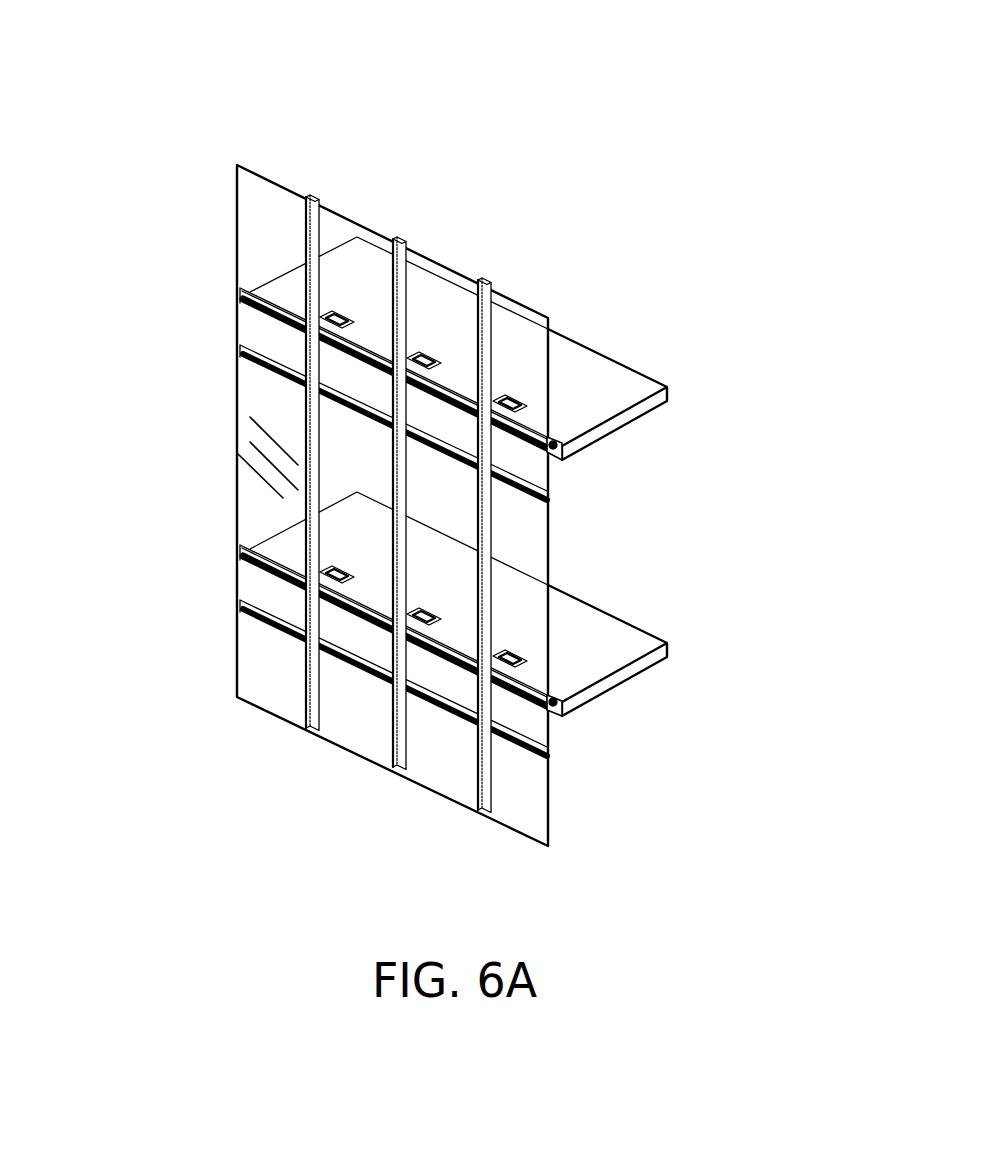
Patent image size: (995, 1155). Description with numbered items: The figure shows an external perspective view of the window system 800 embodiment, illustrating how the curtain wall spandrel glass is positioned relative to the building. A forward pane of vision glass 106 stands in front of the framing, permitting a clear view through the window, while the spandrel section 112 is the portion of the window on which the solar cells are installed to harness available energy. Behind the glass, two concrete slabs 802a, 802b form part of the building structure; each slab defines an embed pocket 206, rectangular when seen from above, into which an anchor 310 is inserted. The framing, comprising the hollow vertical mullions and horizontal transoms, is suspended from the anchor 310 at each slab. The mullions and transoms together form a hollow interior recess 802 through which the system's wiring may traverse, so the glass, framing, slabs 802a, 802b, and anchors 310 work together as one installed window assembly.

The curtain wall installation 800 is at (103, 82).
The hollow interior recess 802 is at (492, 278).
The slab 802a is at (580, 412).
The slab 802b is at (558, 650).
The embed pocket 206 is at (507, 398).
The spandrel section 112 is at (272, 324).
The vision glass 106 is at (284, 490).
The anchor 310 is at (560, 700).